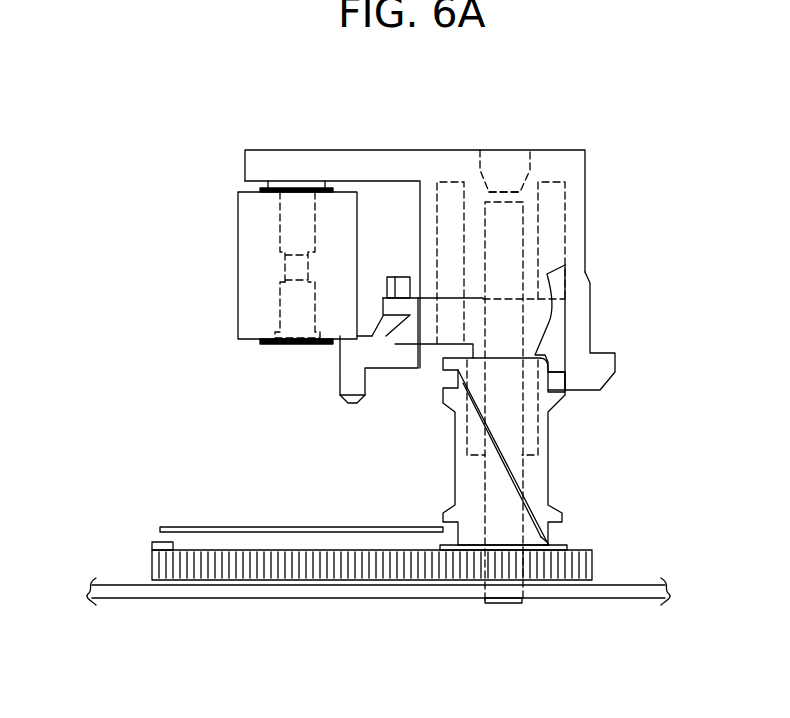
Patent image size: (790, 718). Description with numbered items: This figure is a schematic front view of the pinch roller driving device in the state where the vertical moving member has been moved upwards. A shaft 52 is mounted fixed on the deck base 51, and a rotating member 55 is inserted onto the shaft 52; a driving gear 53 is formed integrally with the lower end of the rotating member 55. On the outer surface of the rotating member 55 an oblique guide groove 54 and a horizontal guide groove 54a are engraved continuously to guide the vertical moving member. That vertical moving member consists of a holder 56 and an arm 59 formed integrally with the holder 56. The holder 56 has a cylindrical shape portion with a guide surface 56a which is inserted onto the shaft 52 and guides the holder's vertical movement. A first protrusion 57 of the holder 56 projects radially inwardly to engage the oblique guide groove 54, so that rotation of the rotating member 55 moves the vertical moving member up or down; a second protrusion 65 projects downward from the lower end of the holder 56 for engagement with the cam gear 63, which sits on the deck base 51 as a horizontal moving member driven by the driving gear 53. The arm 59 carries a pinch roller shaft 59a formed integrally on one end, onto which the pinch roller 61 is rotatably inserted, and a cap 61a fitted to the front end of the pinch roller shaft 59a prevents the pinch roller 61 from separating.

The deck base 51 is at (422, 598).
The shaft 52 is at (527, 216).
The driving gear 53 is at (592, 567).
The oblique guide groove 54 is at (510, 467).
The horizontal guide groove 54a is at (548, 540).
The rotating member 55 is at (453, 480).
The holder 56 is at (585, 230).
The guide surface 56a is at (565, 281).
The first protrusion 57 is at (557, 383).
The arm 59 is at (390, 150).
The pinch roller shaft 59a is at (278, 221).
The pinch roller 61 is at (250, 268).
The cap 61a is at (280, 298).
The cam gear 63 is at (148, 568).
The second protrusion 65 is at (350, 382).